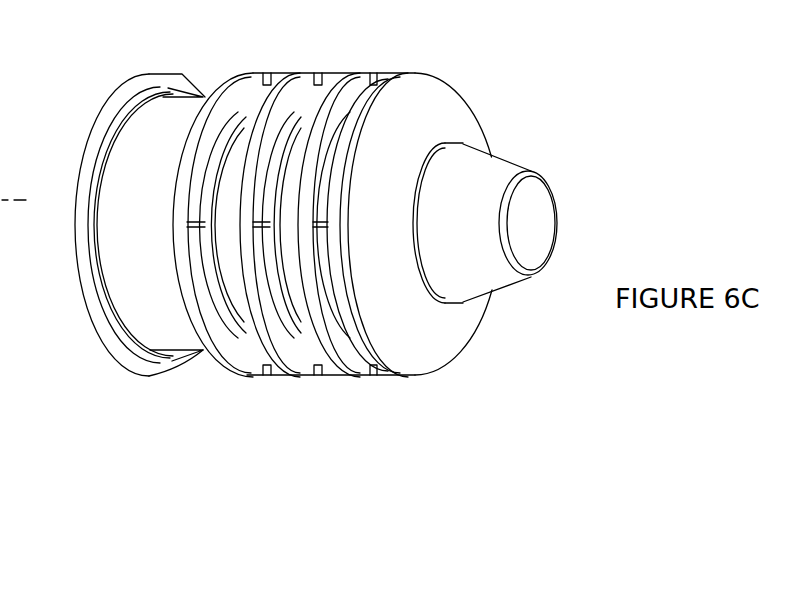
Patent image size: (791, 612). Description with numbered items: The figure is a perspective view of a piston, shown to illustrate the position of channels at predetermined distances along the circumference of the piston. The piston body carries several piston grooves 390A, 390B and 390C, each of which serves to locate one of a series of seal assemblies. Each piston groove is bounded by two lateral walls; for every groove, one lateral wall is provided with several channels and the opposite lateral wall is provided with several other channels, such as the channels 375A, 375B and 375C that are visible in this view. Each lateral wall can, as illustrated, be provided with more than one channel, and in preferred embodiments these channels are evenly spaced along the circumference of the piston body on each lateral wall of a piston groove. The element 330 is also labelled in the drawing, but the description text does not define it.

The base cap 330 is at (140, 278).
The channel 375A is at (258, 72).
The channel 375B is at (256, 318).
The channel 375C is at (378, 73).
The piston groove 390A is at (270, 66).
The piston groove 390B is at (328, 63).
The piston groove 390C is at (403, 63).